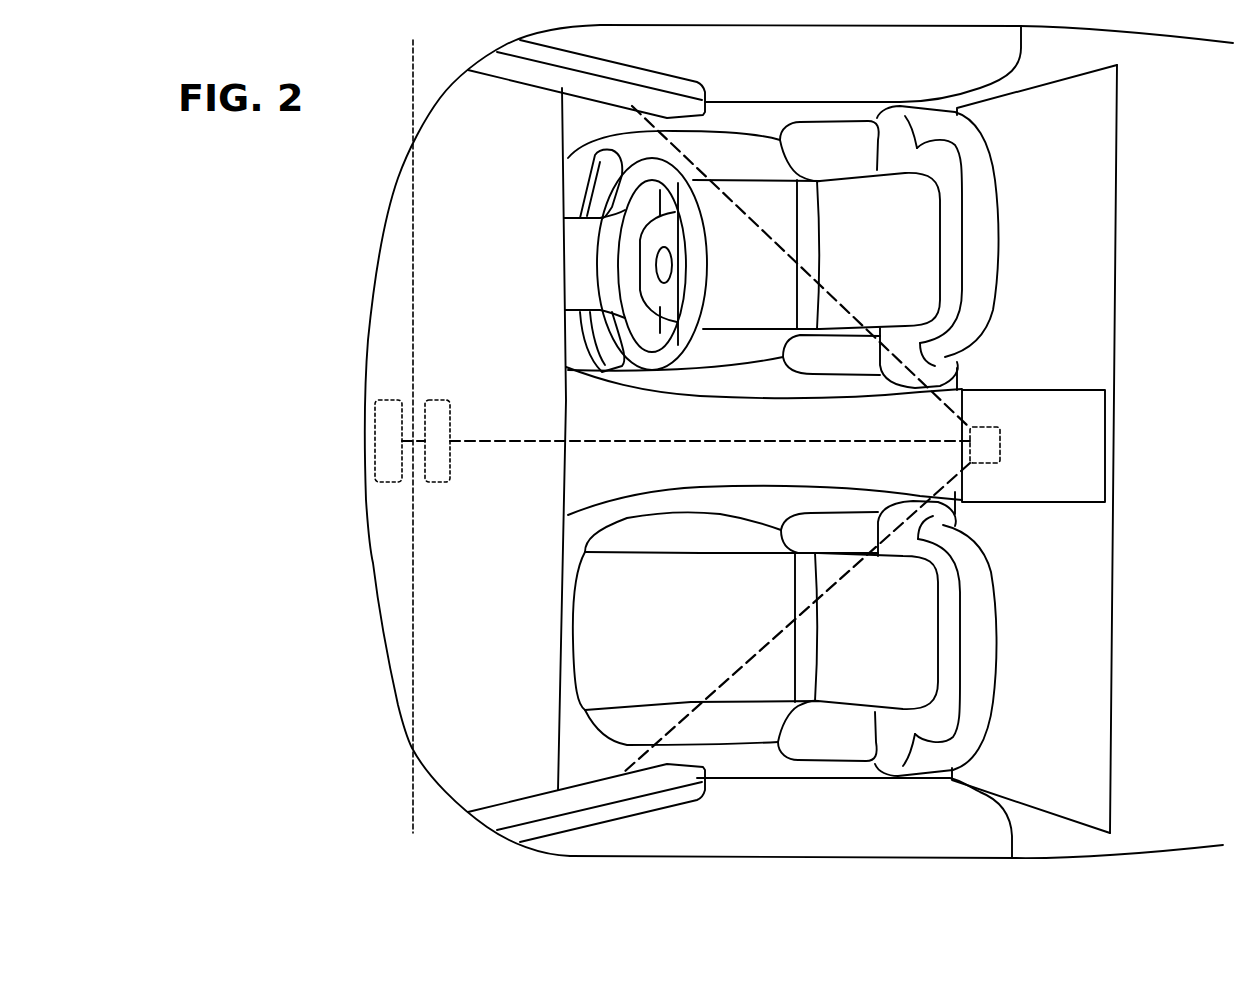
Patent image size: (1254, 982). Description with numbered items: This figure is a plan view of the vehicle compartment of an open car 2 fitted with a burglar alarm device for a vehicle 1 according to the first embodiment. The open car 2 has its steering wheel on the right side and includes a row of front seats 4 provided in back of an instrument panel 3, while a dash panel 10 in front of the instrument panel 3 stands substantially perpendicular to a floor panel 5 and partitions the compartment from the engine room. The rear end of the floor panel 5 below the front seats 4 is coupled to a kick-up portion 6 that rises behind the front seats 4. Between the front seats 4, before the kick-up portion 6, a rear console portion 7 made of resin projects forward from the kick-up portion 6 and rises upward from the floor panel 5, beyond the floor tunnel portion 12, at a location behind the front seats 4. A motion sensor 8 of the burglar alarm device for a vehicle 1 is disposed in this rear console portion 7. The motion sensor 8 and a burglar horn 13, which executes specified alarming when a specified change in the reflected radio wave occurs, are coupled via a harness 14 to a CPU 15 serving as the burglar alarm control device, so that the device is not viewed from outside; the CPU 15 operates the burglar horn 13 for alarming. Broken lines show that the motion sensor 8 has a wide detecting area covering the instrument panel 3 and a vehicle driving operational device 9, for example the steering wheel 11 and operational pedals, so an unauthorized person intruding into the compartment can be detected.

The burglar alarm device for a vehicle 1 is at (1022, 457).
The open car 2 is at (325, 408).
The instrument panel 3 is at (458, 133).
The front seats 4 is at (982, 165).
The floor panel 5 is at (742, 762).
The kick-up portion 6 is at (1092, 715).
The rear console portion 7 is at (1043, 398).
The motion sensor 8 is at (1000, 440).
The vehicle driving operational device 9 is at (700, 346).
The dash panel 10 is at (413, 522).
The steering wheel 11 is at (700, 273).
The floor tunnel portion 12 is at (766, 468).
The burglar horn 13 is at (383, 483).
The harness 14 is at (617, 441).
The CPU 15 is at (438, 400).